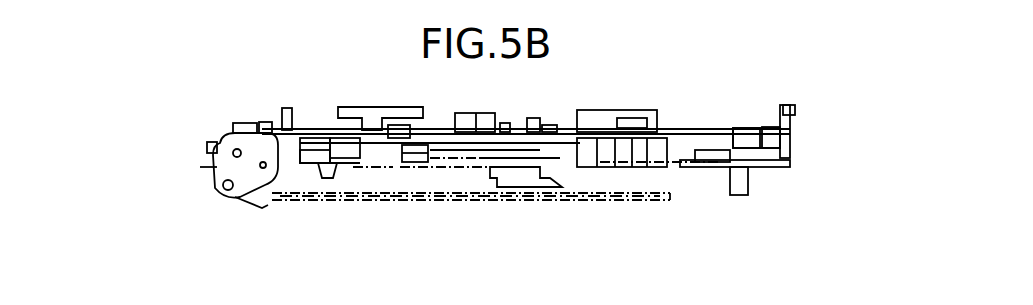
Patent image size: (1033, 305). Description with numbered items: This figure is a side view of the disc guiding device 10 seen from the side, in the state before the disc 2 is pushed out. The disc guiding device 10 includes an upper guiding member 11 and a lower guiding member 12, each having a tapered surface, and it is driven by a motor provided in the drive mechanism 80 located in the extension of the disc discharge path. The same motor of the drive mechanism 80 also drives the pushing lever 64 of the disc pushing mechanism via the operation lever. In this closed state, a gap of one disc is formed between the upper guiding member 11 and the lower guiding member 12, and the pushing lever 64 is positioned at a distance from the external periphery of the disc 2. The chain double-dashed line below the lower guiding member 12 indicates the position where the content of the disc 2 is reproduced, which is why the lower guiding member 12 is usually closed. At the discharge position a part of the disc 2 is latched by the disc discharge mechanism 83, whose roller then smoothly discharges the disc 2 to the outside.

The disc 2 is at (400, 168).
The disc guiding device 10 is at (378, 240).
The upper guiding member 11 is at (338, 157).
The lower guiding member 12 is at (333, 157).
The pushing lever 64 is at (770, 170).
The drive mechanism 80 is at (283, 220).
The disc discharge mechanism 83 is at (218, 162).